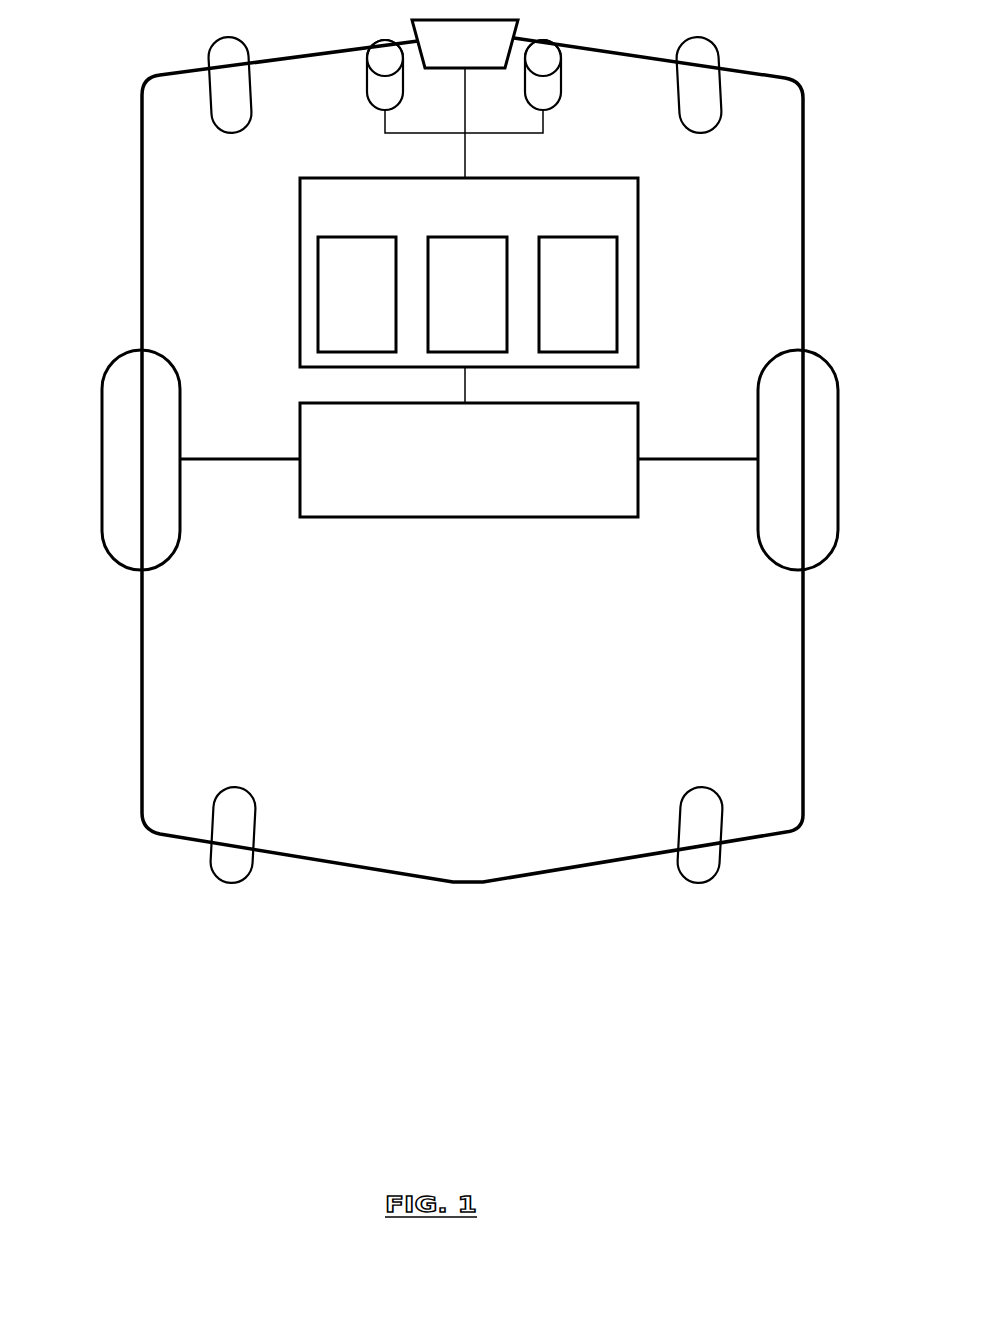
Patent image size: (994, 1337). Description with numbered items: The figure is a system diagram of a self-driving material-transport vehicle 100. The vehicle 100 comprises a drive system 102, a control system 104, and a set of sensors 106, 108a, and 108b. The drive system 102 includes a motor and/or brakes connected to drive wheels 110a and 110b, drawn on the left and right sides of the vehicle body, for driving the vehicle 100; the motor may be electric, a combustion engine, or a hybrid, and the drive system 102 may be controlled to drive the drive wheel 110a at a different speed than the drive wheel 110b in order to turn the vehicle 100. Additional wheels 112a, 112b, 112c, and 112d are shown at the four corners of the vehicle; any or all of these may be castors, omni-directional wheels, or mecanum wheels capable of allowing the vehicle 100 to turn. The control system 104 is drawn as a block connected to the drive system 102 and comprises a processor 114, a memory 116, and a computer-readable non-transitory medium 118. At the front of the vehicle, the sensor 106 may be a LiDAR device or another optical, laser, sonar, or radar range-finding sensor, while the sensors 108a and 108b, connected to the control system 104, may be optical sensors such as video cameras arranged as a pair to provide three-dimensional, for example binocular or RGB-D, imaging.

The self-driving material-transport vehicle 100 is at (497, 773).
The drive system 102 is at (490, 467).
The control system 104 is at (488, 219).
The sensor 106 is at (490, 54).
The sensor 108a is at (367, 69).
The sensor 108b is at (562, 70).
The drive wheel 110a is at (100, 460).
The drive wheel 110b is at (840, 460).
The wheel 112a is at (210, 60).
The wheel 112b is at (765, 42).
The wheel 112c is at (210, 857).
The wheel 112d is at (722, 858).
The processor 114 is at (379, 297).
The memory 116 is at (490, 297).
The computer-readable non-transitory medium 118 is at (601, 297).